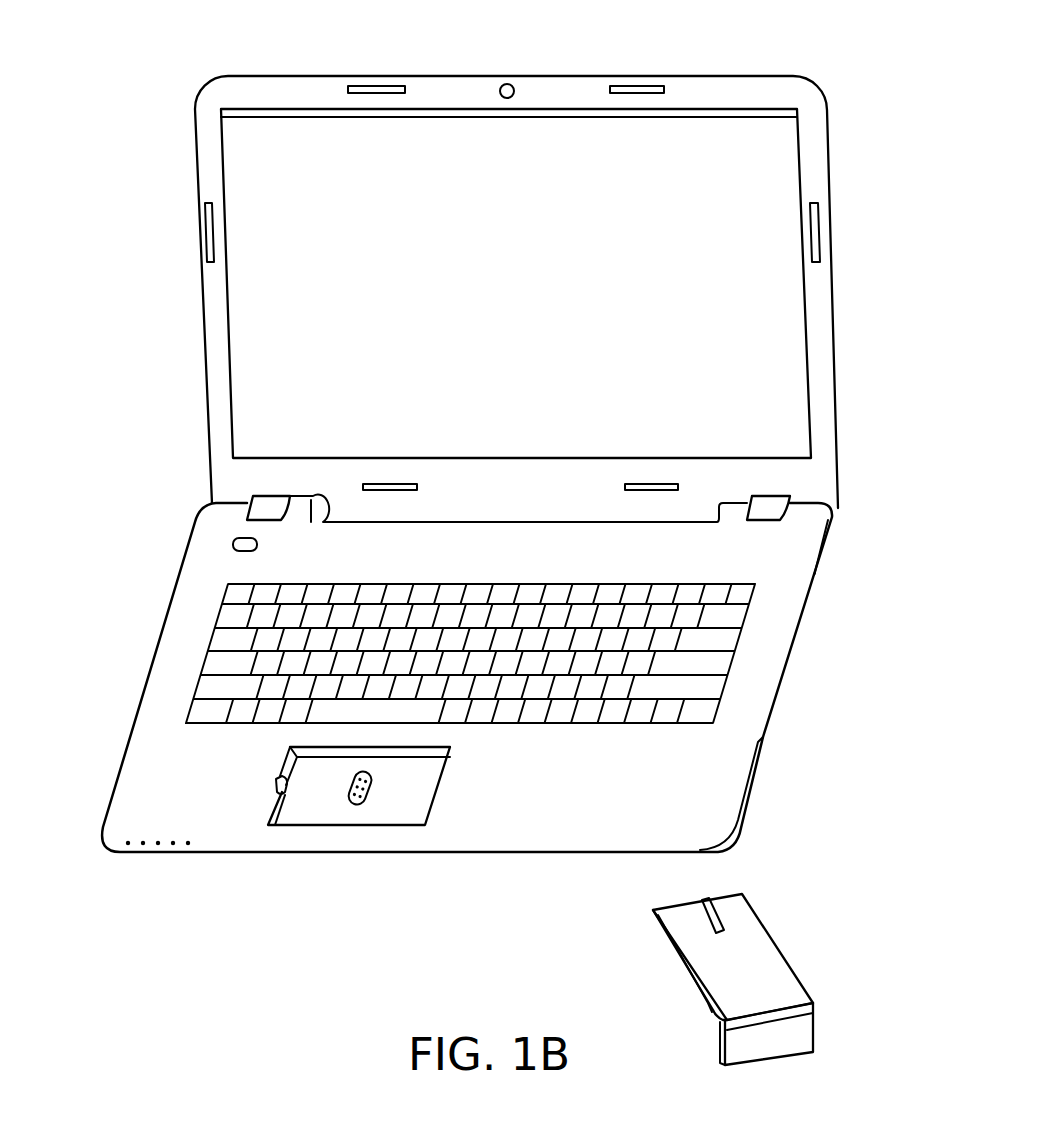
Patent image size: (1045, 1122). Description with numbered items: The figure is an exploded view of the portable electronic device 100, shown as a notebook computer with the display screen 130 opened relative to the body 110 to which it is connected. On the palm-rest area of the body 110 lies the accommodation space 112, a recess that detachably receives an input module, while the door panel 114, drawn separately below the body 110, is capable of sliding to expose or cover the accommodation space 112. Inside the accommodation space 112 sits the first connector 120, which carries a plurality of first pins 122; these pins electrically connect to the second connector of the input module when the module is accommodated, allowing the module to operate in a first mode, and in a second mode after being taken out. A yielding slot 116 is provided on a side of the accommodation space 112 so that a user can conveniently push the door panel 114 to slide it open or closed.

The portable electronic device 100 is at (189, 38).
The body 110 is at (753, 558).
The accommodation space 112 is at (292, 806).
The door panel 114 is at (768, 970).
The yielding slot 116 is at (272, 777).
The first connector 120 is at (355, 807).
The first pins 122 is at (360, 788).
The display screen 130 is at (783, 332).